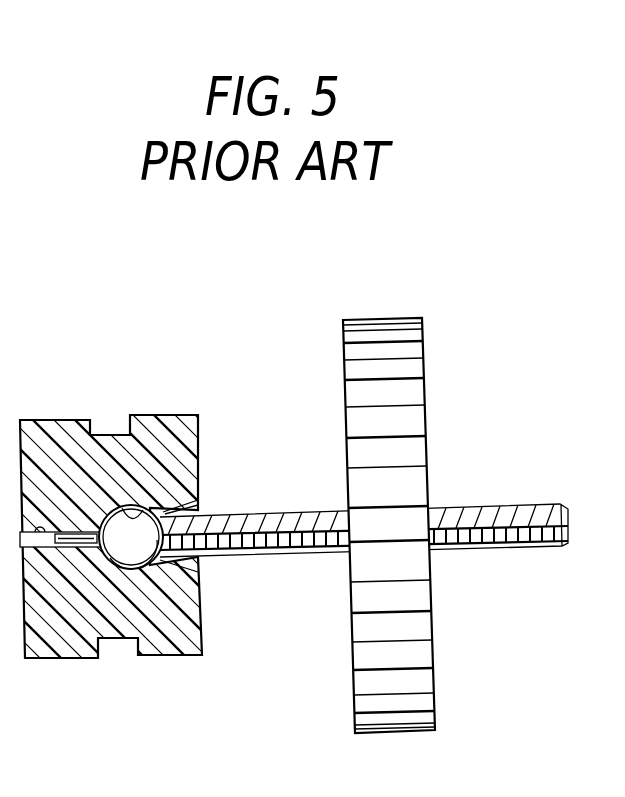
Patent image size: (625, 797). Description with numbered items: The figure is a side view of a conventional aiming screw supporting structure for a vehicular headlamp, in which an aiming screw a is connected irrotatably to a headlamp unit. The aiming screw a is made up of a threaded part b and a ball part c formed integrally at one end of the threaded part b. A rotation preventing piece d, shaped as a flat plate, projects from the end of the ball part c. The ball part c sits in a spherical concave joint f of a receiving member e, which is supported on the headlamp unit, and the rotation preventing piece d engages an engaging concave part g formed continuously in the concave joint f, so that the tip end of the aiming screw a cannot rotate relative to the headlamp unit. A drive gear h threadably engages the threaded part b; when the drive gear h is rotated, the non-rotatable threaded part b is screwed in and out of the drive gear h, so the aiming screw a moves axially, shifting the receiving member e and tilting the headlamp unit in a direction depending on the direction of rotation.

The aiming screw a is at (537, 502).
The threaded part b is at (473, 542).
The ball part c is at (128, 580).
The rotation preventing piece d is at (70, 543).
The receiving member e is at (167, 433).
The spherical concave joint f is at (198, 417).
The engaging concave part g is at (43, 527).
The drive gear h is at (436, 697).